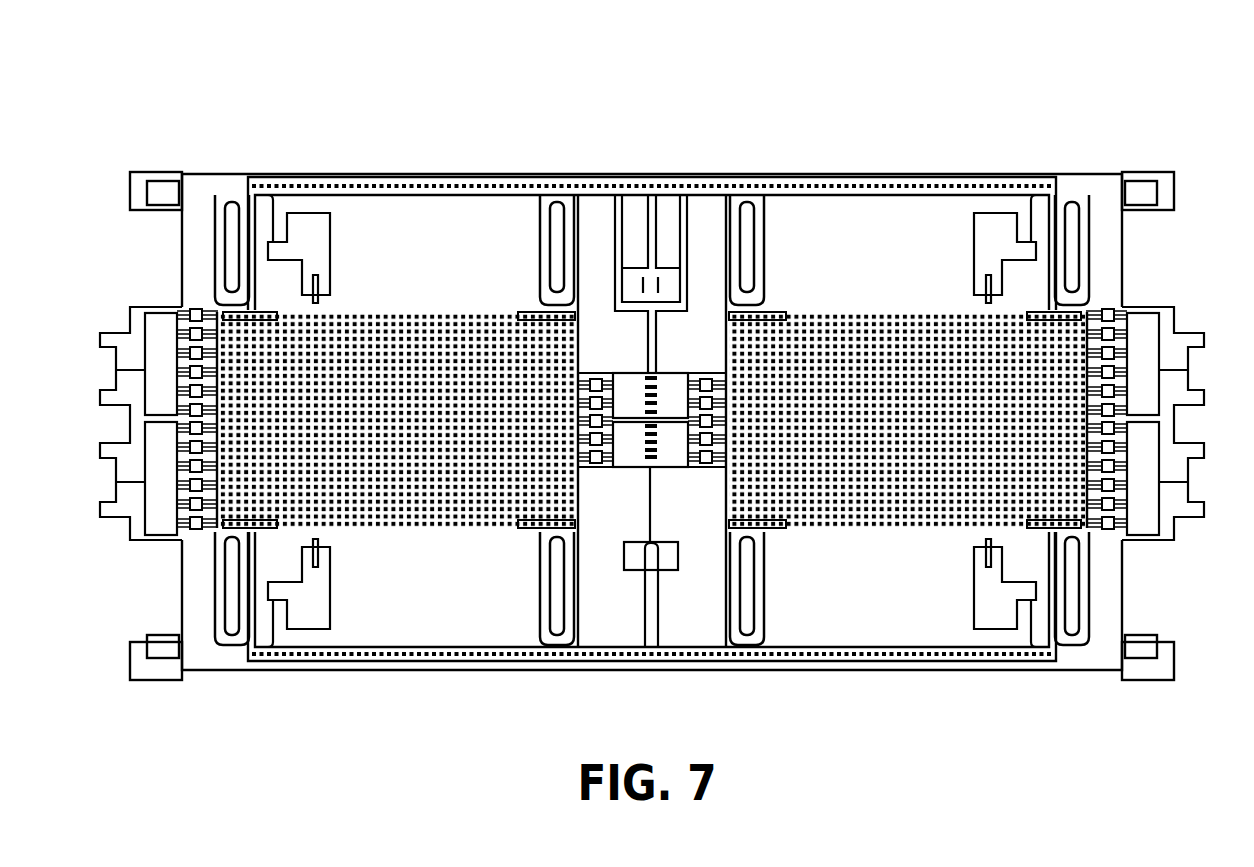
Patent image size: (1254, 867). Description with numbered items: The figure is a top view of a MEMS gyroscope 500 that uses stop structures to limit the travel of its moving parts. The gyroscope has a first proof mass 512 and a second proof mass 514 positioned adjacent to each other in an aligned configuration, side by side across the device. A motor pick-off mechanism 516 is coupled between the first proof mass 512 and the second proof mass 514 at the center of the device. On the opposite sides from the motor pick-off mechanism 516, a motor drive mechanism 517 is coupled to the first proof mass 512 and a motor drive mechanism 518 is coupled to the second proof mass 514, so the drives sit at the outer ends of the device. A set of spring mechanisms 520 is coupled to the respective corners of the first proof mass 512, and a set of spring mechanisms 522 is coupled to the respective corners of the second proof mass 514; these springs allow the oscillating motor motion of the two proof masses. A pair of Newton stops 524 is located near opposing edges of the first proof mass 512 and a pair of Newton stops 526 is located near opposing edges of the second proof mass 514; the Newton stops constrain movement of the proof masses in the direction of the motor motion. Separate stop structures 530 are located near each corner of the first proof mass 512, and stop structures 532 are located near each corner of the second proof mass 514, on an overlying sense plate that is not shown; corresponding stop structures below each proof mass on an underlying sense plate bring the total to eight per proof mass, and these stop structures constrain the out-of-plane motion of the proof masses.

The MEMS gyroscope 500 is at (580, 112).
The first proof mass 512 is at (357, 330).
The second proof mass 514 is at (845, 335).
The motor pick-off mechanism 516 is at (640, 383).
The motor drive mechanism 517 is at (155, 517).
The motor drive mechanism 518 is at (1150, 333).
The spring mechanisms 520 is at (213, 232).
The spring mechanisms 522 is at (765, 218).
The Newton stops 524 is at (330, 280).
The Newton stops 526 is at (998, 268).
The stop structures 530 is at (235, 302).
The stop structures 532 is at (770, 303).